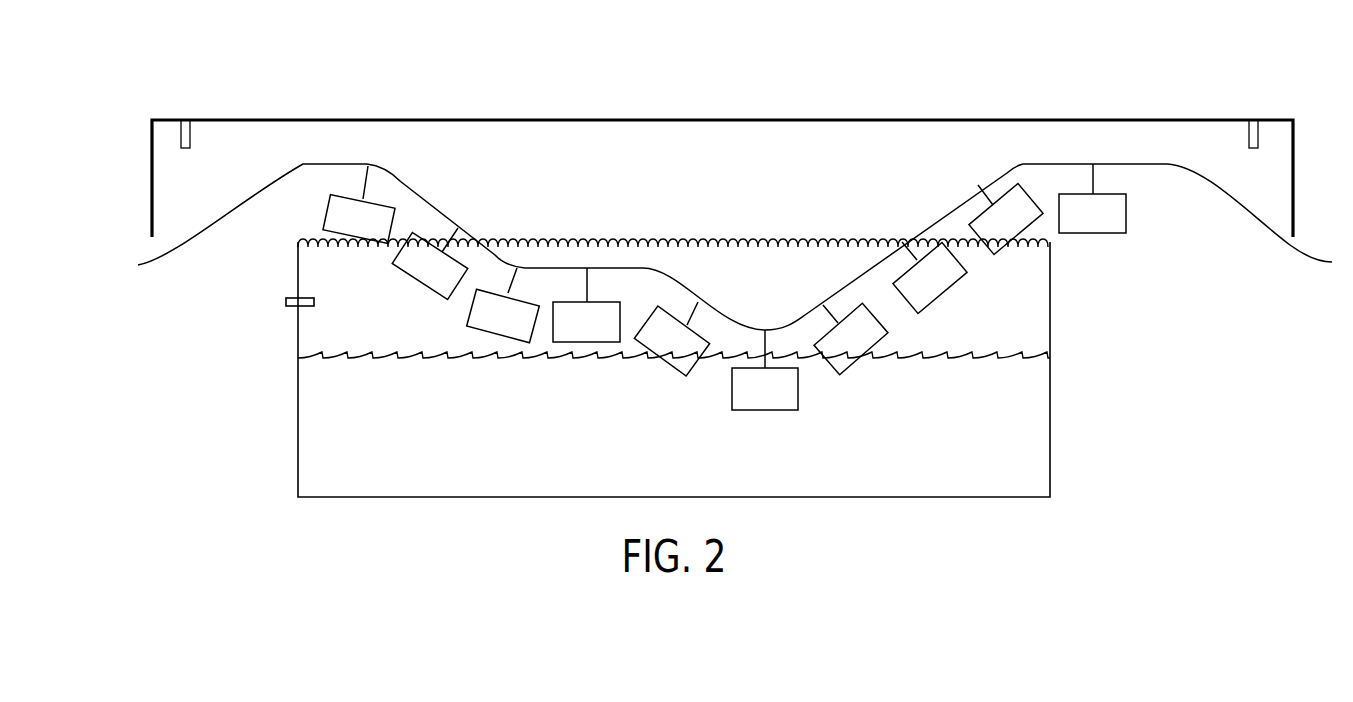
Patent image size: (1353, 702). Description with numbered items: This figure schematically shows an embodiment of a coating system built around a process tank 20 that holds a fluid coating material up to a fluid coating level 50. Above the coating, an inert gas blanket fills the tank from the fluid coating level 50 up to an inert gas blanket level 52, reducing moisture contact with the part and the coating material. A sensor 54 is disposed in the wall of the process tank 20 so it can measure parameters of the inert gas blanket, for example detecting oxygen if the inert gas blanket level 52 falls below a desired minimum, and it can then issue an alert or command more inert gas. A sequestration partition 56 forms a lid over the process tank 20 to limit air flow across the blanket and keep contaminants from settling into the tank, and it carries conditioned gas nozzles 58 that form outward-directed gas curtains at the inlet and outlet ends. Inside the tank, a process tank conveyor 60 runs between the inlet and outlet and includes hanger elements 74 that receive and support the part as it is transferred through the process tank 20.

The process tank 20 is at (298, 450).
The fluid coating level 50 is at (298, 352).
The inert gas blanket level 52 is at (297, 241).
The sensor 54 is at (286, 302).
The sequestration partition 56 is at (567, 111).
The conditioned gas nozzles 58 is at (187, 118).
The process tank conveyor 60 is at (1162, 168).
The hanger elements 74 is at (766, 332).